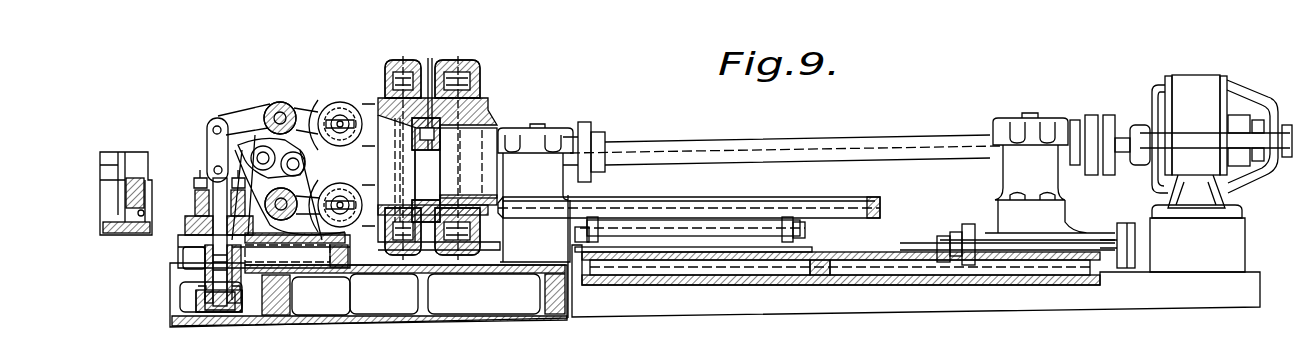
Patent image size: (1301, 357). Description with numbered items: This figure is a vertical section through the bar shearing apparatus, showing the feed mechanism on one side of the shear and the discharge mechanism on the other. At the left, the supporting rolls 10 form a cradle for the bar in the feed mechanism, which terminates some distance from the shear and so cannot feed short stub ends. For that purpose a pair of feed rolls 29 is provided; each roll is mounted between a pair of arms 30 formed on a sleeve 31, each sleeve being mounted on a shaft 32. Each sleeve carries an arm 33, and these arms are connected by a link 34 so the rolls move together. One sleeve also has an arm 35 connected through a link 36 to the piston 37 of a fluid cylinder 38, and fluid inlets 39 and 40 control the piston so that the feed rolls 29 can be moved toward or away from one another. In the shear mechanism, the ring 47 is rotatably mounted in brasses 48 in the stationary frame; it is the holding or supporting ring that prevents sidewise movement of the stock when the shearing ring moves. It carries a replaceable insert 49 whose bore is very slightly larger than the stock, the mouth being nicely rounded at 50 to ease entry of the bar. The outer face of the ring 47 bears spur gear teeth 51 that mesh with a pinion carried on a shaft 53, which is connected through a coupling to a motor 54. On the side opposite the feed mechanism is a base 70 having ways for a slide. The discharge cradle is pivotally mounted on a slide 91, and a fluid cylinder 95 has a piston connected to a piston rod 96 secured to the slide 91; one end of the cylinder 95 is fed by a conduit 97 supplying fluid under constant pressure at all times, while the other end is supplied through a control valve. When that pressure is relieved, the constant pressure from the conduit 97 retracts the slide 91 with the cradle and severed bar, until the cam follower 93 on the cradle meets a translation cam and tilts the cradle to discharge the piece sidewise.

The supporting rolls 10 is at (105, 178).
The feed rolls 29 is at (335, 102).
The arms 30 is at (304, 108).
The sleeve 31 is at (279, 105).
The shaft 32 is at (277, 114).
The arm 33 is at (290, 195).
The link 34 is at (262, 148).
The arm 35 is at (206, 113).
The link 36 is at (215, 143).
The piston 37 is at (213, 196).
The fluid cylinder 38 is at (182, 279).
The fluid inlet 39 is at (190, 230).
The fluid inlet 40 is at (200, 302).
The ring 47 is at (380, 108).
The brasses 48 is at (403, 78).
The replaceable insert 49 is at (432, 178).
The rounded mouth 50 is at (415, 144).
The spur gear teeth 51 is at (432, 80).
The shaft 53 is at (897, 147).
The motor 54 is at (1196, 82).
The base 70 is at (868, 300).
The slide 91 is at (697, 253).
The cam follower 93 is at (876, 206).
The fluid cylinder 95 is at (1079, 233).
The piston rod 96 is at (942, 252).
The conduit 97 is at (970, 220).